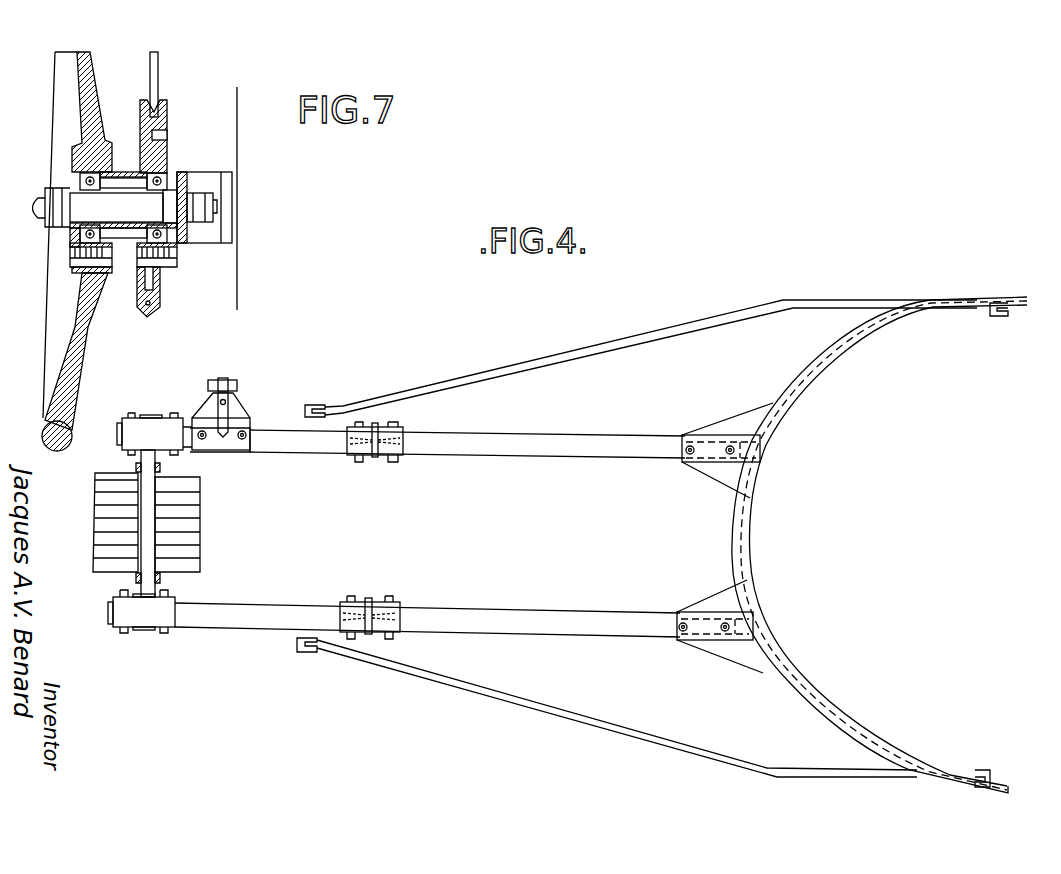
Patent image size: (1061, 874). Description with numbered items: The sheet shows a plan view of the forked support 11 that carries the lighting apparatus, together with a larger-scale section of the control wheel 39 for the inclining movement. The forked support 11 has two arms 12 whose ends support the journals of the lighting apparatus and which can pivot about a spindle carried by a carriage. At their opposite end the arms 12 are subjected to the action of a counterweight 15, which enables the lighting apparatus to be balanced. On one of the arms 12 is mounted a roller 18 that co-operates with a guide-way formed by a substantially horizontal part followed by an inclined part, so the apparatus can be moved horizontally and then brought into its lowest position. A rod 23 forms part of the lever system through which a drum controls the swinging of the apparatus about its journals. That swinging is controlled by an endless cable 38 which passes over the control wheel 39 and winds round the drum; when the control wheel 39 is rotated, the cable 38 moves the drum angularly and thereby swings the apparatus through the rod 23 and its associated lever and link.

In FIG. 7, the endless cable 38 is at (155, 90).
In FIG. 7, the control wheel 39 is at (160, 118).
In FIG. 4, the forked support 11 is at (818, 370).
In FIG. 4, the arms 12 is at (502, 442).
In FIG. 4, the counterweight 15 is at (187, 550).
In FIG. 4, the roller 18 is at (233, 385).
In FIG. 4, the rod 23 is at (628, 342).